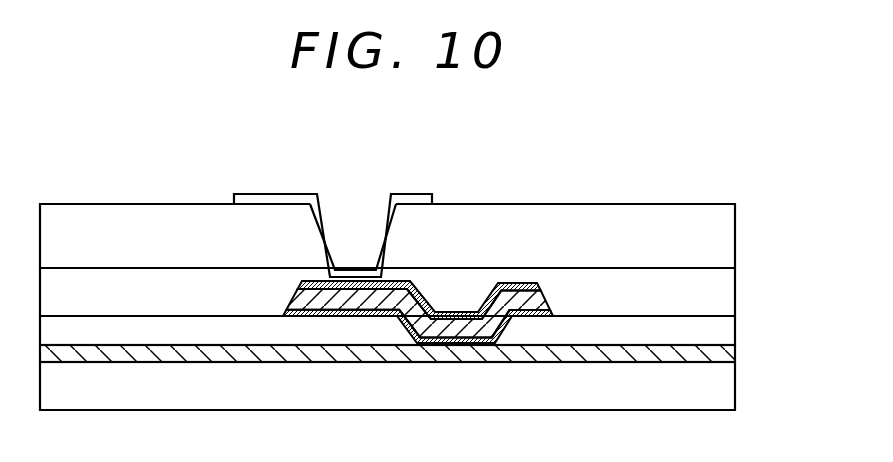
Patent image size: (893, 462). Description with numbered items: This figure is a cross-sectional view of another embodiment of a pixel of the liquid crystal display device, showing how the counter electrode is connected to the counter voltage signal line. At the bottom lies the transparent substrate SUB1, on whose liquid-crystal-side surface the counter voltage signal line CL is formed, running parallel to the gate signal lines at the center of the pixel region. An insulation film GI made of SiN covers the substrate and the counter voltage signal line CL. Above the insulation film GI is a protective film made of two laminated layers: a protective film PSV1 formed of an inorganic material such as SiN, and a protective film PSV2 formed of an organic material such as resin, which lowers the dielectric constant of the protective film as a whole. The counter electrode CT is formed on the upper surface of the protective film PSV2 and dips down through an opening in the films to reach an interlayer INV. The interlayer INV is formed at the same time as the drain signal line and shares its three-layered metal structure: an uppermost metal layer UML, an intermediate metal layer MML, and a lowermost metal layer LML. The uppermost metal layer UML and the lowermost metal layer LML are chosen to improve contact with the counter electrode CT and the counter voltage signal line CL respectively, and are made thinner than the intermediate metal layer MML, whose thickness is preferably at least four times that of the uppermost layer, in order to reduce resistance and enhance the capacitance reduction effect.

The counter electrode CT is at (290, 195).
The protective film PSV2 is at (733, 241).
The protective film PSV1 is at (728, 295).
The insulation film GI is at (728, 327).
The counter voltage signal line CL is at (728, 353).
The transparent substrate SUB1 is at (728, 383).
The interlayer INV is at (695, 142).
The metal layer UML is at (513, 282).
The metal layer MML is at (542, 293).
The lower metal layer LML is at (555, 313).